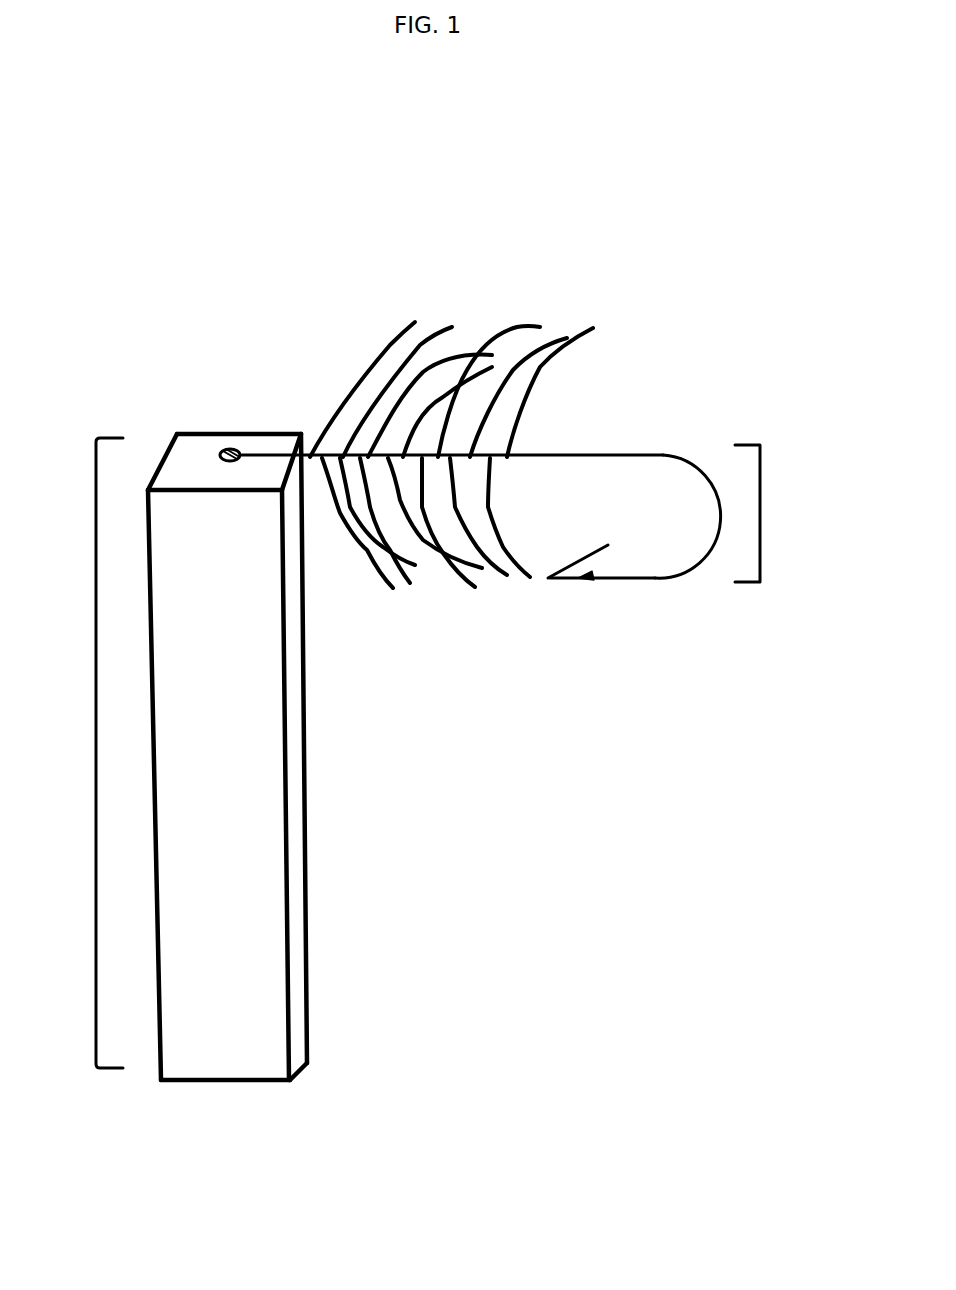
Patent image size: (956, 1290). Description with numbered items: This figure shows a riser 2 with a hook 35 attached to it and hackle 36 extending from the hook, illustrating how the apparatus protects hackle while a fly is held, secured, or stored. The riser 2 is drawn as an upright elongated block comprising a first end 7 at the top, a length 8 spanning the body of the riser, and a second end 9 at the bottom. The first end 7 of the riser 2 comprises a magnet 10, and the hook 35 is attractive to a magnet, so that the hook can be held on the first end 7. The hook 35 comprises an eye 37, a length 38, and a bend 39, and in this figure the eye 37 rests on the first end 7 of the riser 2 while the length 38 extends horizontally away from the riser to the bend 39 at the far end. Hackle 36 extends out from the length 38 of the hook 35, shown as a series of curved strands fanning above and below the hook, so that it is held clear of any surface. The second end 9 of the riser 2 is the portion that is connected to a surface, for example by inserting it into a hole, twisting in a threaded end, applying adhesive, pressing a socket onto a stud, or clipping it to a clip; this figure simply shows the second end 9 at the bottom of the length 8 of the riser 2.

The riser 2 is at (280, 743).
The first end 7 is at (159, 447).
The length 8 is at (96, 753).
The second end 9 is at (284, 1090).
The magnet 10 is at (192, 426).
The hook 35 is at (711, 453).
The hackle 36 is at (426, 322).
The eye 37 is at (239, 436).
The length 38 is at (622, 447).
The bend 39 is at (760, 513).